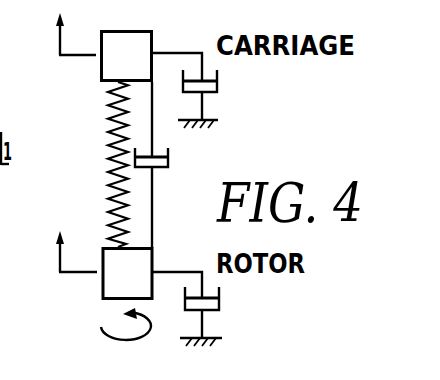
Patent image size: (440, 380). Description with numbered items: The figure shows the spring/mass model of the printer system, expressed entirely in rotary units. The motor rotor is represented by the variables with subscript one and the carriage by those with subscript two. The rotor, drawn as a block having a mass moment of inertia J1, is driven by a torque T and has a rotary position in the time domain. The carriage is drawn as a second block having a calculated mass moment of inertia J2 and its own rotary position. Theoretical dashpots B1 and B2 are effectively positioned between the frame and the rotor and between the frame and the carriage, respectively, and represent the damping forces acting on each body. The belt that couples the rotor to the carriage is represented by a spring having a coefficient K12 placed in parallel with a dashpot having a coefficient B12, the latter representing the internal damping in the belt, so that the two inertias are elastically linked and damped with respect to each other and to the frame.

The mass moment of inertia of the rotor J1 is at (127, 274).
The mass moment of inertia of the carriage J2 is at (127, 56).
The theoretical dashpot B1 is at (201, 309).
The theoretical dashpot B2 is at (203, 90).
The belt dashpot coefficient B12 is at (177, 165).
The belt spring coefficient K12 is at (93, 164).
The torque T is at (126, 339).